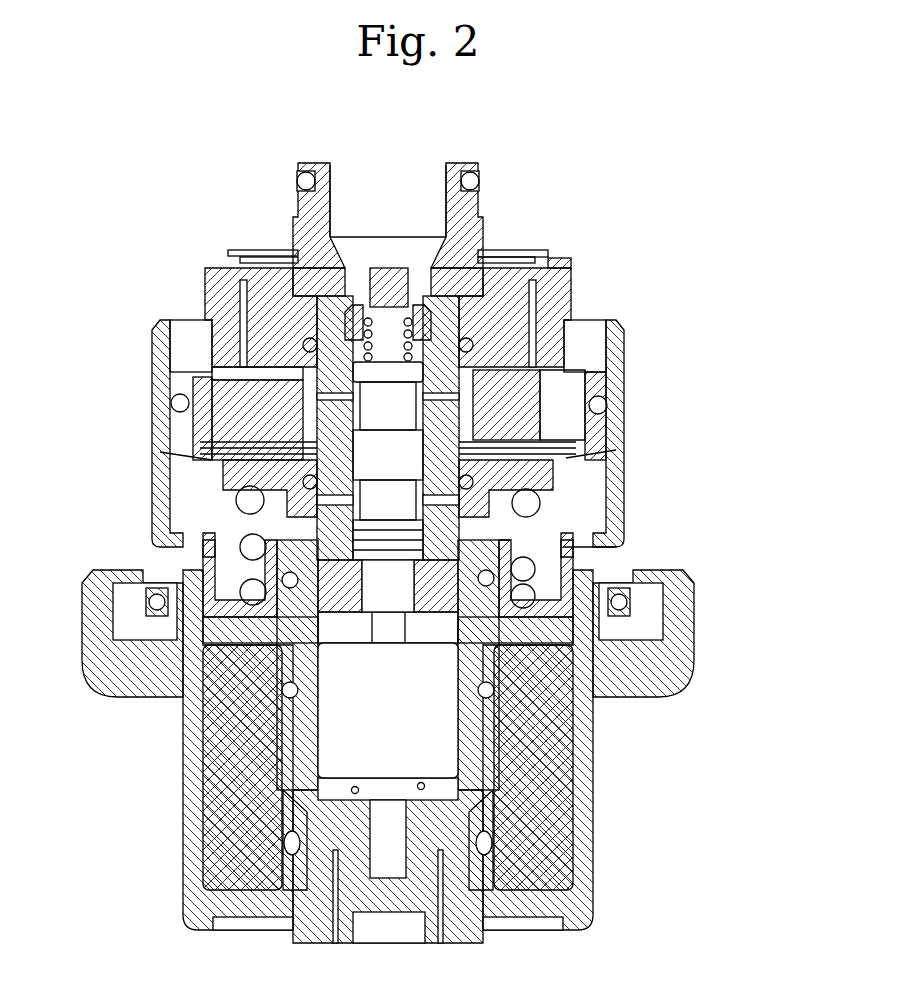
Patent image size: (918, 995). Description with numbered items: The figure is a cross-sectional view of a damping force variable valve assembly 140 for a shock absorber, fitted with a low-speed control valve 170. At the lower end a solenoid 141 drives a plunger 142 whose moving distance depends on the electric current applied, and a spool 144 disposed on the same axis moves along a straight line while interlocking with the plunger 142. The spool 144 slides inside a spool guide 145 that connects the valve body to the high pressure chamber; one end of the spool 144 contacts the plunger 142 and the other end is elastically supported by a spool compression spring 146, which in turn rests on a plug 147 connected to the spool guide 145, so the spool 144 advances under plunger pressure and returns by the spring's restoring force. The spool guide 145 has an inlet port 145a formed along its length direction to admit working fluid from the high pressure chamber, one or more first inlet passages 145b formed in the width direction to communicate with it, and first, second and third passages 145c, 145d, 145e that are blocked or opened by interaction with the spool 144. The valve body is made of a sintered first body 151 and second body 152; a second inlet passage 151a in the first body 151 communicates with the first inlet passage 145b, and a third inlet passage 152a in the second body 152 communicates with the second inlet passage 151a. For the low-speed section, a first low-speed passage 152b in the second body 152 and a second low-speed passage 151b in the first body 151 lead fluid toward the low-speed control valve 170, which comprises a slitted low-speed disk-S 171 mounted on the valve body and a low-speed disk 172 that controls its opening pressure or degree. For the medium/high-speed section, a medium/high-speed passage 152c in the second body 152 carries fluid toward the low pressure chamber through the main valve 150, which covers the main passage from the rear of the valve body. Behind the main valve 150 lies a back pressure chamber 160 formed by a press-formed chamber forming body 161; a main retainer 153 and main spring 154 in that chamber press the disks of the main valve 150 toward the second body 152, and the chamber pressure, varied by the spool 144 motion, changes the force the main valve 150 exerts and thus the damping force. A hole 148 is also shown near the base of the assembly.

The damping force variable valve assembly 140 is at (212, 162).
The solenoid 141 is at (215, 861).
The plunger 142 is at (343, 715).
The spool 144 is at (377, 447).
The spool guide 145 is at (487, 526).
The inlet port 145a is at (334, 185).
The first inlet passage 145b is at (418, 285).
The first passage 145c is at (500, 398).
The second passage 145d is at (582, 546).
The third passage 145e is at (507, 556).
The spool compression spring 146 is at (416, 336).
The plug 147 is at (387, 268).
The vent hole 148 is at (355, 793).
The main valve 150 is at (574, 474).
The first body 151 is at (387, 312).
The second inlet passage 151a is at (552, 305).
The second low-speed passage 151b is at (247, 297).
The second body 152 is at (382, 399).
The third inlet passage 152a is at (546, 422).
The first low-speed passage 152b is at (240, 368).
The medium/high-speed passage 152c is at (171, 404).
The main retainer 153 is at (228, 477).
The main spring 154 is at (238, 546).
The back pressure chamber 160 is at (193, 500).
The chamber forming body 161 is at (626, 466).
The low-speed control valve 170 is at (434, 236).
The low-speed disk-S 171 is at (536, 261).
The low-speed disk 172 is at (525, 250).